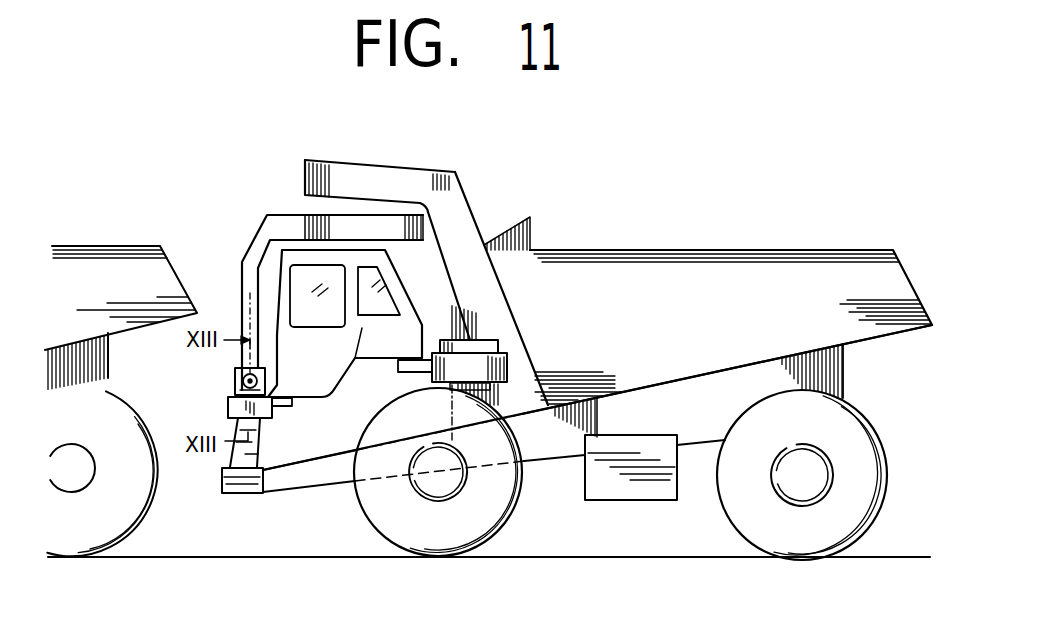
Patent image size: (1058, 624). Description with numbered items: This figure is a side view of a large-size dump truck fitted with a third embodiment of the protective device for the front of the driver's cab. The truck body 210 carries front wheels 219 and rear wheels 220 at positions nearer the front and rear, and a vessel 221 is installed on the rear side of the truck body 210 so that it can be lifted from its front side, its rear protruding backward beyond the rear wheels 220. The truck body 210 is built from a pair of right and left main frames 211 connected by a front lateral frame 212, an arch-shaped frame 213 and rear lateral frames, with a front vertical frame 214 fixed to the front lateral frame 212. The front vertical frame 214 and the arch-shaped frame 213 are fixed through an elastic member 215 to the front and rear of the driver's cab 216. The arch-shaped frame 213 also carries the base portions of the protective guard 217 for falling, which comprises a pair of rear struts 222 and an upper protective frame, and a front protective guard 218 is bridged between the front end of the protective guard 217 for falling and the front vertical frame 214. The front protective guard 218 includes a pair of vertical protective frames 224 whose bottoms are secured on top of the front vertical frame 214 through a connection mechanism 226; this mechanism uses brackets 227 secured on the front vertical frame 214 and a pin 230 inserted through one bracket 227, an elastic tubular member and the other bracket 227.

The truck body 210 is at (541, 462).
The main frame 211 is at (566, 440).
The front lateral frame 212 is at (263, 493).
The arch-shaped frame 213 is at (505, 363).
The front vertical frame 214 is at (247, 452).
The elastic member 215 is at (412, 373).
The driver's cab 216 is at (297, 407).
The protective guard for falling 217 is at (450, 288).
The front protective guard 218 is at (302, 288).
The front wheels 219 is at (487, 516).
The rear wheels 220 is at (758, 515).
The vessel 221 is at (133, 258).
The rear strut 222 is at (432, 252).
The vertical protective frame 224 is at (245, 297).
The connection mechanism 226 is at (212, 378).
The bracket 227 is at (268, 386).
The pin 230 is at (238, 381).